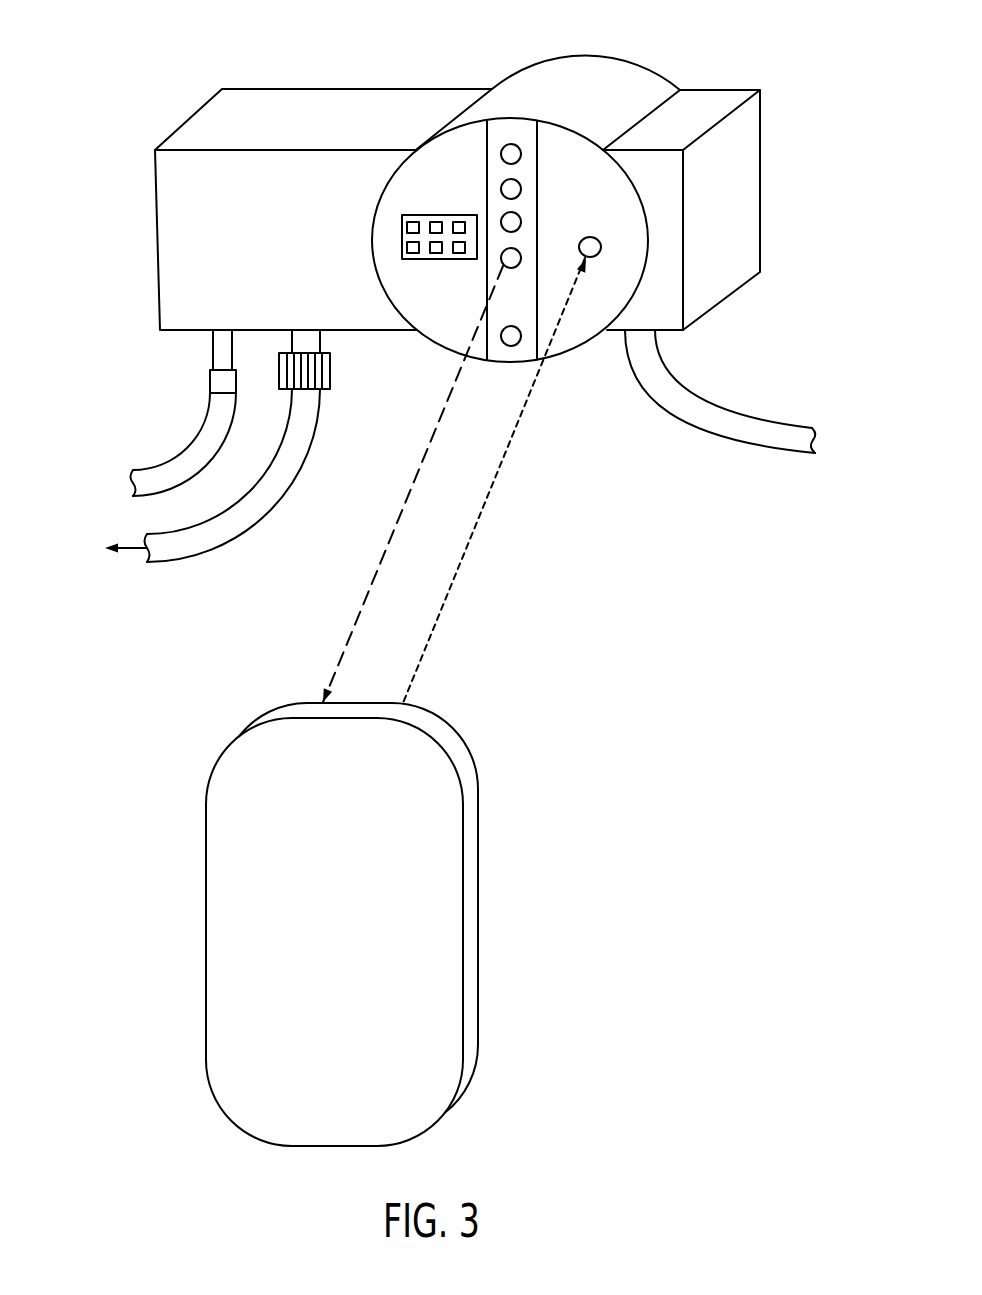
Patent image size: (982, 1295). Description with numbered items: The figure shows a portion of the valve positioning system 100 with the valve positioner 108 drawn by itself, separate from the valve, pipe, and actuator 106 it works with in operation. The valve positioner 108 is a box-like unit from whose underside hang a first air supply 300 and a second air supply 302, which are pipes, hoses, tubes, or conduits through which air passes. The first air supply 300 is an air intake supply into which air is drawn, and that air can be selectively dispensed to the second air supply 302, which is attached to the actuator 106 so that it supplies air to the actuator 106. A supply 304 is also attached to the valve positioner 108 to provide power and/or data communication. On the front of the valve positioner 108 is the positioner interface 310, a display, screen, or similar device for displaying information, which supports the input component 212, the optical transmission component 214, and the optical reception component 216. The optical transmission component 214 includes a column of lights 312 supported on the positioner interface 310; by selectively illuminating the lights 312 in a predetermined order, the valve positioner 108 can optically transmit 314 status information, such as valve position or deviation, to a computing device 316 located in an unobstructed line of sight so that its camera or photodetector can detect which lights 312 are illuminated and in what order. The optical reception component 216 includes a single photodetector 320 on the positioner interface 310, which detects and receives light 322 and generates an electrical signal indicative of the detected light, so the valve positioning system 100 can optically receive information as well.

The valve positioning system 100 is at (128, 64).
The actuator 106 is at (94, 552).
The valve positioner 108 is at (478, 76).
The input component 212 is at (402, 238).
The optical transmission component 214 is at (512, 110).
The optical reception component 216 is at (591, 162).
The first air supply 300 is at (178, 466).
The second air supply 302 is at (217, 553).
The supply 304 is at (752, 450).
The positioner interface 310 is at (568, 129).
The lights 312 is at (501, 220).
The optical transmission 314 is at (390, 537).
The computing device 316 is at (206, 934).
The photodetector 320 is at (591, 237).
The light 322 is at (468, 552).